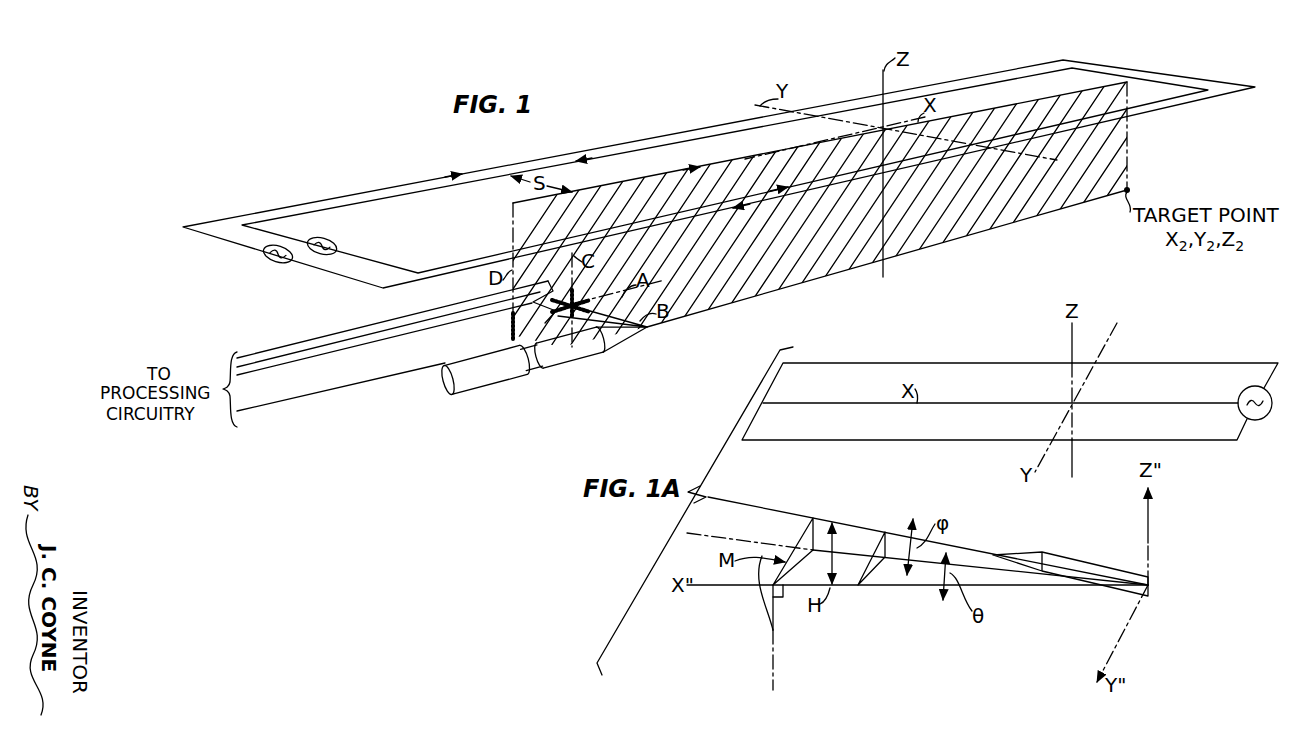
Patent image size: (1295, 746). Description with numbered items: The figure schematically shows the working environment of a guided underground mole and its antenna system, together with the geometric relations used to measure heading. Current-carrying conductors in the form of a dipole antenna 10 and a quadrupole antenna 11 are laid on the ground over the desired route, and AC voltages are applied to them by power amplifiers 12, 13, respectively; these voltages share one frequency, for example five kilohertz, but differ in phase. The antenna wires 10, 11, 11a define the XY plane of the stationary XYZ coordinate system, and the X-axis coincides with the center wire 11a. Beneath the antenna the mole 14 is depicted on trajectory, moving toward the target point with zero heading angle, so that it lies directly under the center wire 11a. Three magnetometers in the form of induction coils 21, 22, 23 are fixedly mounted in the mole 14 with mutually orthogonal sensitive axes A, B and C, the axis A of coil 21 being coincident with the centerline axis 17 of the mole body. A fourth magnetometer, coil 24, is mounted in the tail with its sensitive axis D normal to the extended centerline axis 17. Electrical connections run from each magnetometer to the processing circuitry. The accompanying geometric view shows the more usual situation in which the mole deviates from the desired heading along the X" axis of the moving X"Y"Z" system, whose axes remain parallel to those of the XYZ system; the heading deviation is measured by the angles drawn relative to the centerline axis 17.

In FIG. 1, the dipole antenna 10 is at (600, 148).
In FIG. 1A, the dipole antenna 10 is at (1010, 390).
In FIG. 1, the quadrupole antenna 11 is at (649, 148).
In FIG. 1A, the quadrupole antenna 11 is at (1195, 350).
In FIG. 1, the center wire 11a is at (680, 169).
In FIG. 1A, the center wire 11a is at (1158, 403).
In FIG. 1, the power amplifier 12 is at (268, 260).
In FIG. 1A, the power amplifier 12 is at (1256, 431).
In FIG. 1, the power amplifier 13 is at (320, 254).
In FIG. 1A, the power amplifier 13 is at (1255, 403).
In FIG. 1, the mole 14 is at (582, 356).
In FIG. 1A, the mole 14 is at (1110, 558).
In FIG. 1A, the centerline axis 17 is at (758, 507).
In FIG. 1, the induction coil 21 is at (593, 305).
In FIG. 1, the induction coil 22 is at (570, 294).
In FIG. 1, the induction coil 23 is at (577, 298).
In FIG. 1, the coil 24 is at (510, 333).